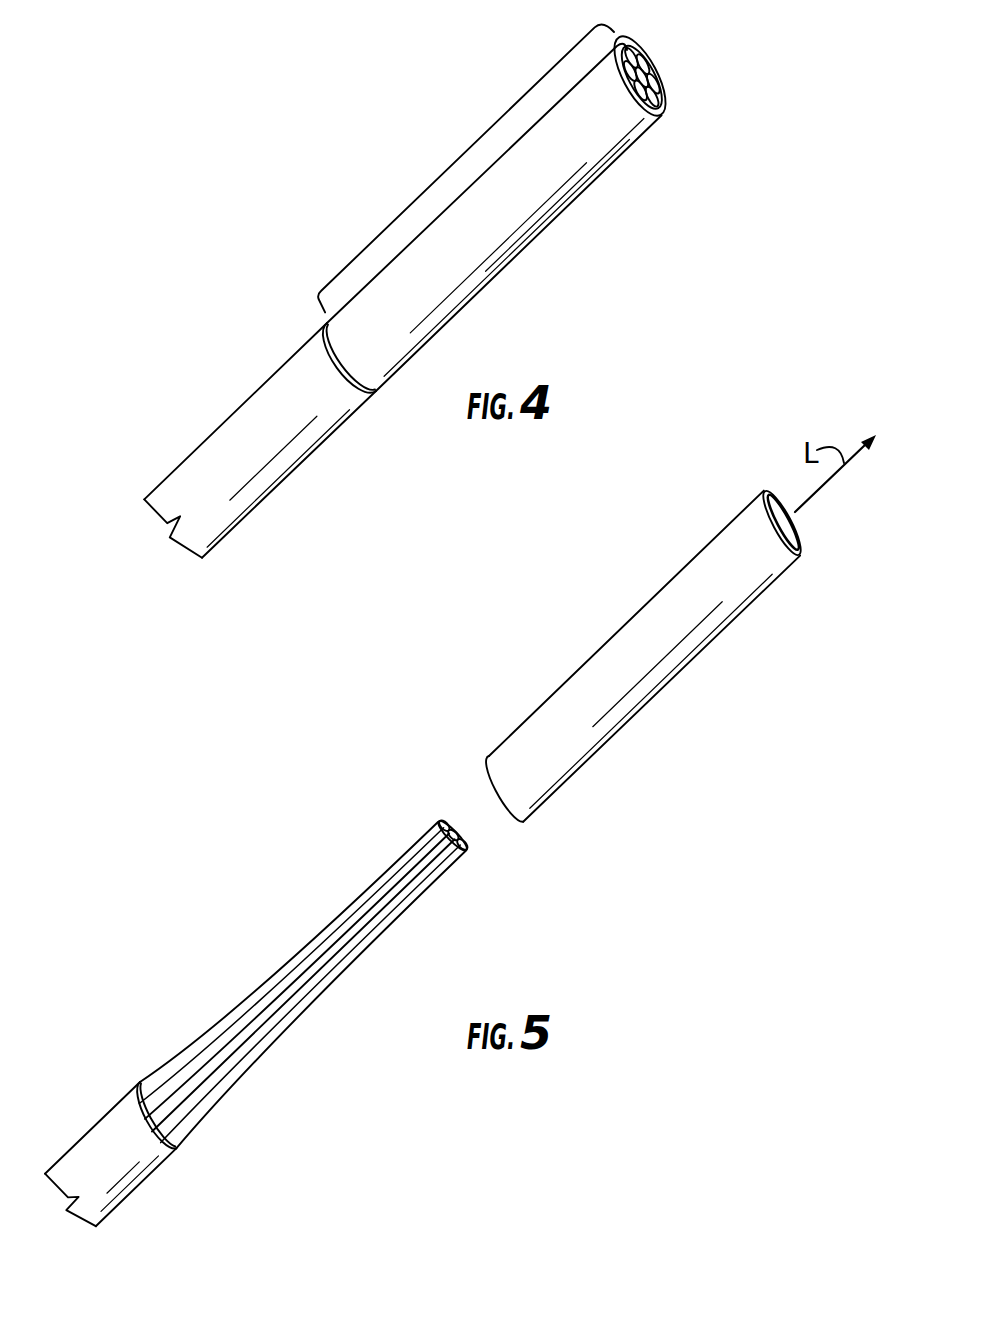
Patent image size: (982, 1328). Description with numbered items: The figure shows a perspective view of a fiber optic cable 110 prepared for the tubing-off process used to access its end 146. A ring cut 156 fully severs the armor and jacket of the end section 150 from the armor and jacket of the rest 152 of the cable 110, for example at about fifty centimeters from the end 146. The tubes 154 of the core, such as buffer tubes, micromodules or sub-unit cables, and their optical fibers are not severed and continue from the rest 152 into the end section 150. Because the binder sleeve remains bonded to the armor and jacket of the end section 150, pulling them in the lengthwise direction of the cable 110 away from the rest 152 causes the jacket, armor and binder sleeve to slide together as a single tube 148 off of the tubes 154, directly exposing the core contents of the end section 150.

In FIG. 4, the fiber optic cable 110 is at (298, 222).
In FIG. 5, the fiber optic cable 110 is at (263, 918).
In FIG. 4, the end 146 is at (672, 50).
In FIG. 5, the end 146 is at (458, 802).
In FIG. 5, the tube 148 is at (683, 572).
In FIG. 4, the end section 150 is at (468, 146).
In FIG. 4, the rest of the cable 152 is at (214, 394).
In FIG. 5, the rest of the cable 152 is at (88, 1090).
In FIG. 5, the tubes 154 is at (410, 883).
In FIG. 4, the ring cut 156 is at (350, 387).
In FIG. 5, the ring cut 156 is at (186, 1142).